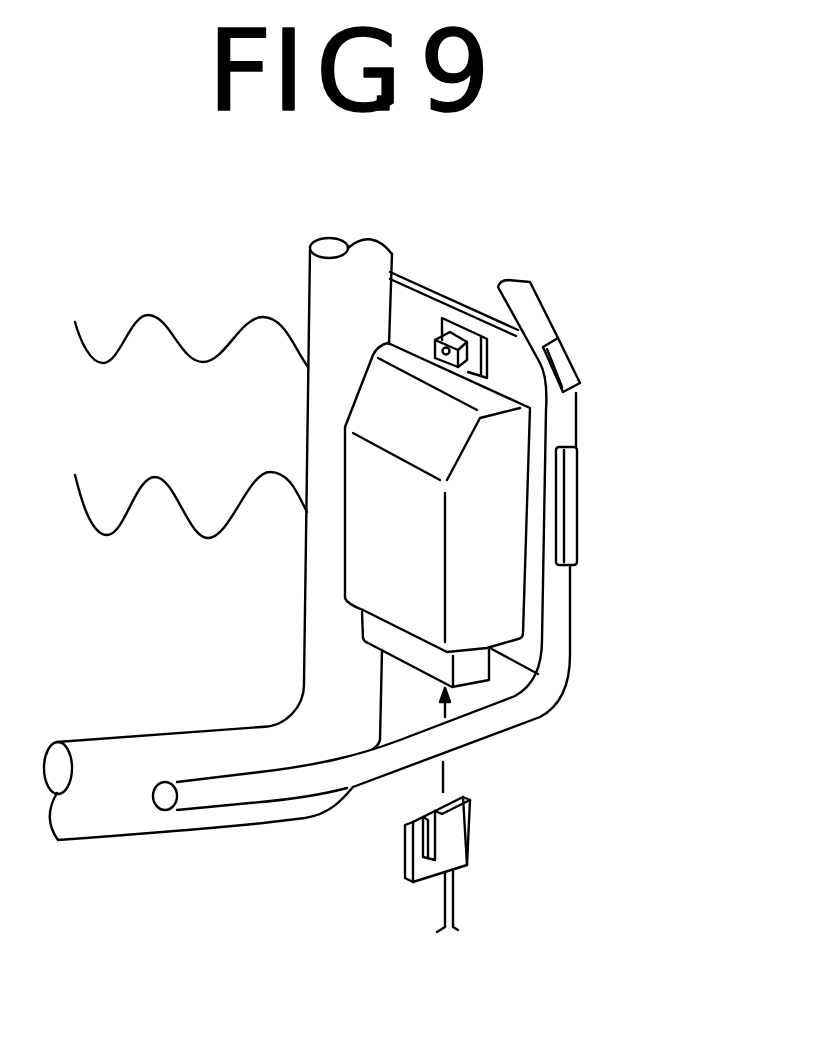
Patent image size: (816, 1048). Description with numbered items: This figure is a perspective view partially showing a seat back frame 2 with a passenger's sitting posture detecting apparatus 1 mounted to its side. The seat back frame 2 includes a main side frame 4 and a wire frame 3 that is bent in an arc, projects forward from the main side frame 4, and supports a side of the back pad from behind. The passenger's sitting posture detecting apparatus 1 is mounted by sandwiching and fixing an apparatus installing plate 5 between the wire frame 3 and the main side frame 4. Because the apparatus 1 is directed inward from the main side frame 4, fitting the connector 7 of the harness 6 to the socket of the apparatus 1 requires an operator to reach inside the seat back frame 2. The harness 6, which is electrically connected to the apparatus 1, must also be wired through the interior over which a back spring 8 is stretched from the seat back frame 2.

The passenger's sitting posture detecting apparatus 1 is at (422, 414).
The seat back frame 2 is at (146, 739).
The wire frame 3 is at (560, 600).
The main side frame 4 is at (323, 293).
The apparatus installing plate 5 is at (528, 381).
The harness 6 is at (455, 890).
The connector 7 is at (458, 830).
The back spring 8 is at (138, 318).